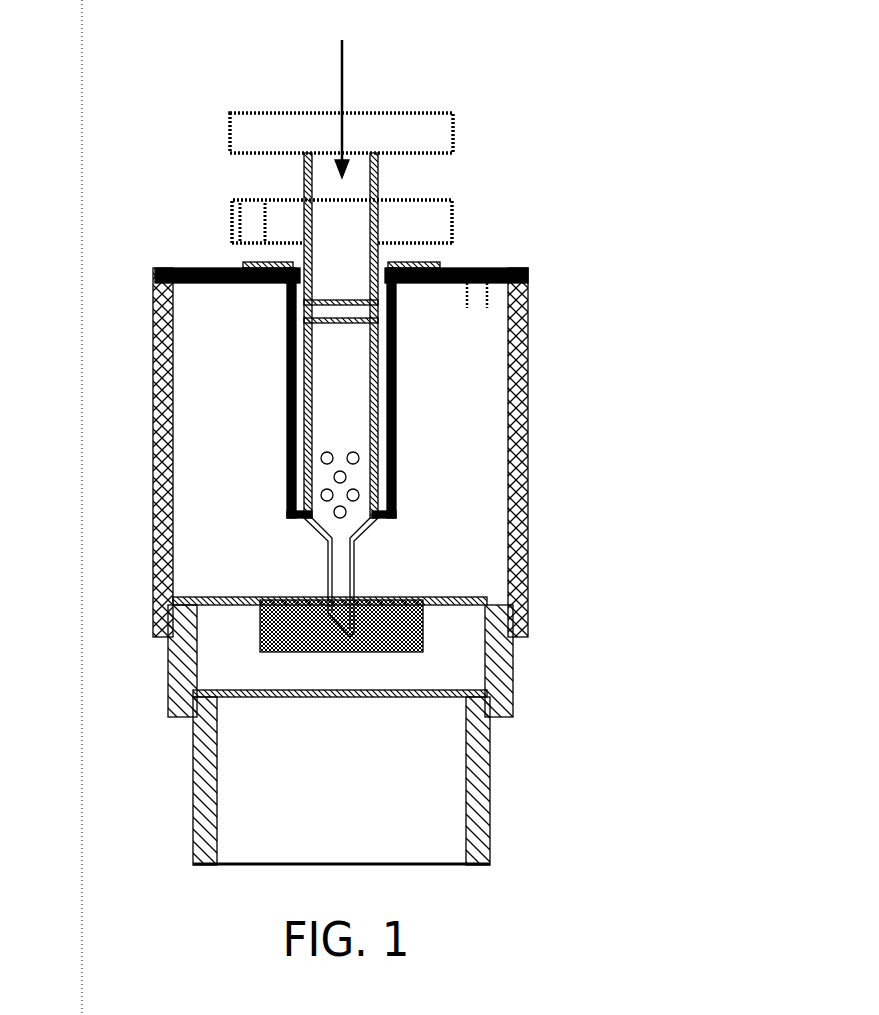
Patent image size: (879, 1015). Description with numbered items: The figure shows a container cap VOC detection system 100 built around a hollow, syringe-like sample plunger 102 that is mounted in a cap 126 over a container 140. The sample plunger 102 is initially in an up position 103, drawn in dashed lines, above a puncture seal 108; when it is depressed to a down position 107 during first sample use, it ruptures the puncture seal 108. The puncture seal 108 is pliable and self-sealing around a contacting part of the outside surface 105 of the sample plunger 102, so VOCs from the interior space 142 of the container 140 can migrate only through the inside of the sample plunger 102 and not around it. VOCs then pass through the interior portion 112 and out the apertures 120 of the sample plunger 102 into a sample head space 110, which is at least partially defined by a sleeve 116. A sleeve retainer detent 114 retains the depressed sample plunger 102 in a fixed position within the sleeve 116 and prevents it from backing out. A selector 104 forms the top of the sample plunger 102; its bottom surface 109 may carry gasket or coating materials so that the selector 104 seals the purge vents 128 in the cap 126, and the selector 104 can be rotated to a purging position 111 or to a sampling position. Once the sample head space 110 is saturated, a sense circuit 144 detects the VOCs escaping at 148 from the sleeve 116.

The container cap VOC detection system 100 is at (262, 62).
The sample plunger 102 is at (315, 400).
The up position 103 is at (397, 125).
The selector 104 is at (232, 222).
The outside surface 105 is at (353, 567).
The down position 107 is at (420, 212).
The puncture seal 108 is at (287, 597).
The bottom surface 109 is at (452, 258).
The sample head space 110 is at (387, 387).
The purging position 111 is at (478, 418).
The interior portion 112 is at (332, 593).
The sleeve retainer detent 114 is at (292, 288).
The sleeve 116 is at (288, 462).
The apertures 120 is at (357, 485).
The cap 126 is at (528, 270).
The purge vents 128 is at (433, 287).
The container 140 is at (195, 770).
The interior space 142 is at (230, 633).
The sense circuit 144 is at (252, 210).
The VOC escape location 148 is at (240, 250).